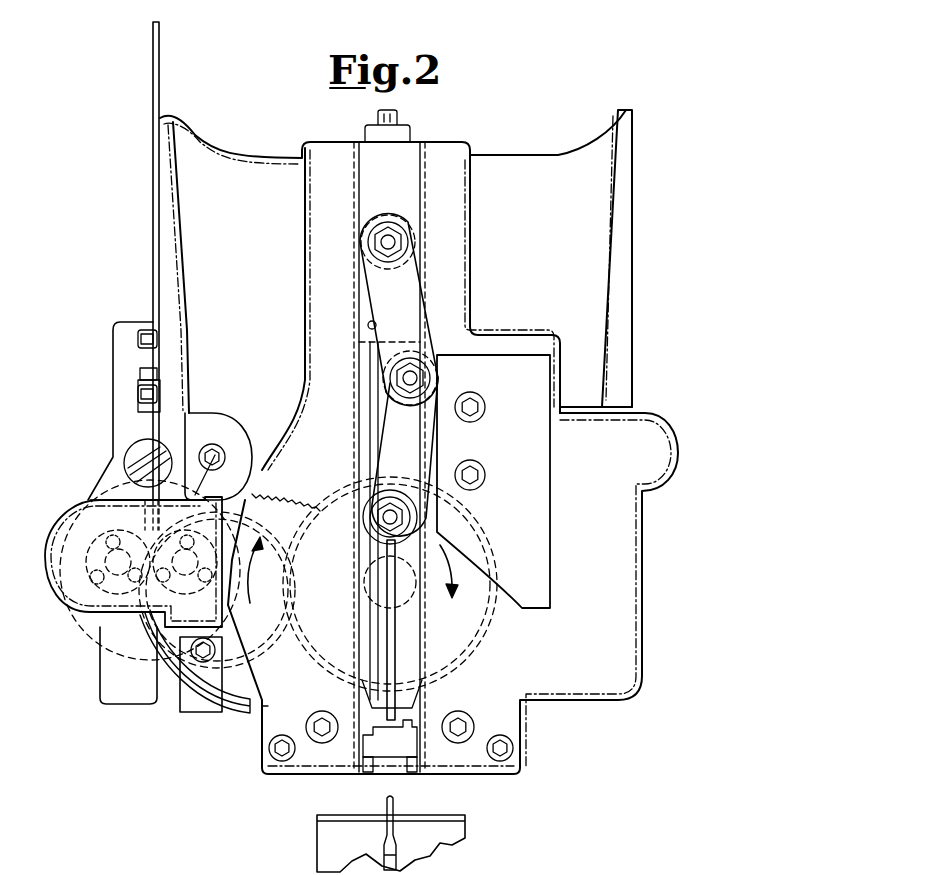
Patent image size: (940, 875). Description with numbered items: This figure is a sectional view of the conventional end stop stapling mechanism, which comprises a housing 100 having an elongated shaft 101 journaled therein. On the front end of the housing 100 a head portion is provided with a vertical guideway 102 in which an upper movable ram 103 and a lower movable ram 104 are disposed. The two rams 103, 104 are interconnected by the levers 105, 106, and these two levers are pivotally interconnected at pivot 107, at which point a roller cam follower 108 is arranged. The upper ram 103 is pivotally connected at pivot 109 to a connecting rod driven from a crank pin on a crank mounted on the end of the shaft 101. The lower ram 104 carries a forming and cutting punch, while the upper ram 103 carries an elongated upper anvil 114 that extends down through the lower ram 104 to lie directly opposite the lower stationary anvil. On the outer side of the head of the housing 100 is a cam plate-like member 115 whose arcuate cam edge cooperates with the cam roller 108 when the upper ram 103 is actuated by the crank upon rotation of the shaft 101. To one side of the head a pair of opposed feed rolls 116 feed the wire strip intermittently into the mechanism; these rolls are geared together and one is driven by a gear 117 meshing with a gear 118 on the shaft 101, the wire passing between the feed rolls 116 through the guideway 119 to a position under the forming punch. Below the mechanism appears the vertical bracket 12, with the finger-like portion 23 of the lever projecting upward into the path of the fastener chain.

The housing 100 is at (600, 688).
The elongated shaft 101 is at (375, 578).
The vertical guideway 102 is at (362, 422).
The upper movable ram 103 is at (405, 142).
The lower movable ram 104 is at (415, 660).
The lever 105 is at (371, 272).
The lever 106 is at (380, 456).
The pivotal interconnection 107 is at (405, 385).
The roller cam follower 108 is at (412, 368).
The pivotal connection 109 is at (395, 247).
The upper anvil 114 is at (372, 392).
The cam plate-like member 115 is at (543, 537).
The feed rolls 116 is at (100, 620).
The gear 117 is at (190, 574).
The gear 118 is at (328, 668).
The guideway 119 is at (166, 692).
The bracket 12 is at (326, 840).
The finger-like portion 23 is at (396, 803).